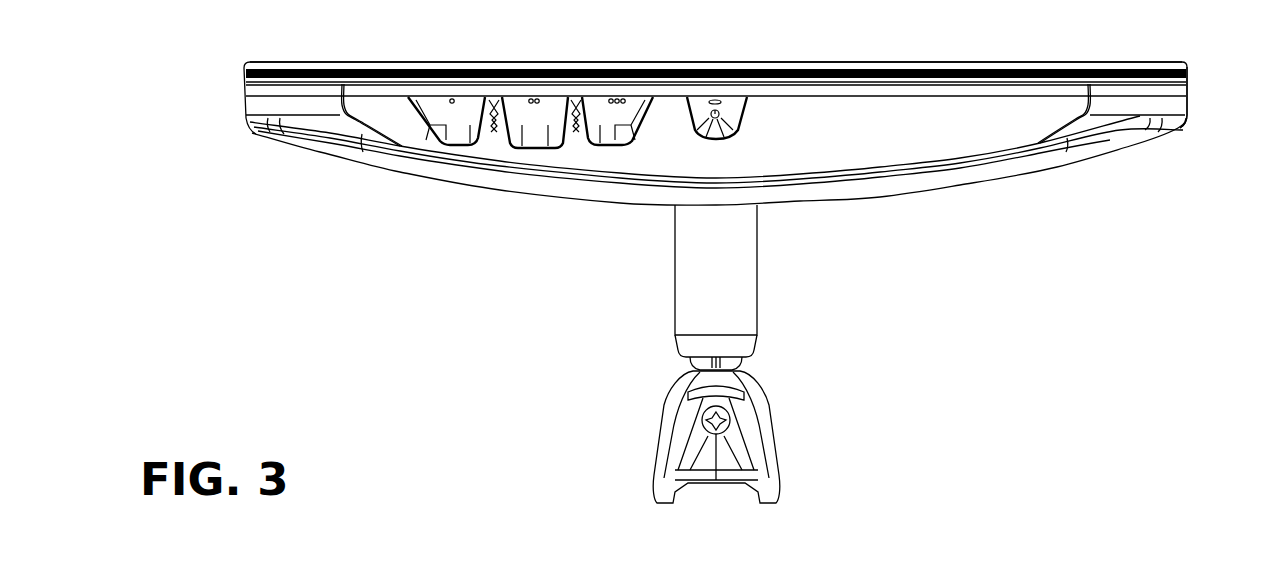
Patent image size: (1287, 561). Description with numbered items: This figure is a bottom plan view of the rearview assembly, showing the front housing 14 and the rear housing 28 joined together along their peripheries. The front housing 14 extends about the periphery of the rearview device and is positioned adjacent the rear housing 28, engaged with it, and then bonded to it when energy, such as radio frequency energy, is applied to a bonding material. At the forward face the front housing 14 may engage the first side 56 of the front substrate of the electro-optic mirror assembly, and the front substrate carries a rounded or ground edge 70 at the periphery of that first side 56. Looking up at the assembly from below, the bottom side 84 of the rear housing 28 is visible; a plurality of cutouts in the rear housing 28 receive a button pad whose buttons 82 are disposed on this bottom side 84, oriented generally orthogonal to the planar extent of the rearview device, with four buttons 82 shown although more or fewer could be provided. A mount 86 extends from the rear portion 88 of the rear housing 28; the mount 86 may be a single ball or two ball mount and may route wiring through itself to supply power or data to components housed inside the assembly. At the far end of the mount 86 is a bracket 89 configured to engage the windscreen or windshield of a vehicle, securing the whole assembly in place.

The front housing 14 is at (1132, 90).
The first side 56 is at (548, 62).
The rounded or ground edge 70 is at (246, 62).
The rear housing 28 is at (1178, 104).
The bottom side 84 is at (377, 102).
The buttons 82 is at (533, 149).
The rear portion 88 is at (830, 205).
The mount 86 is at (740, 288).
The bracket 89 is at (775, 447).